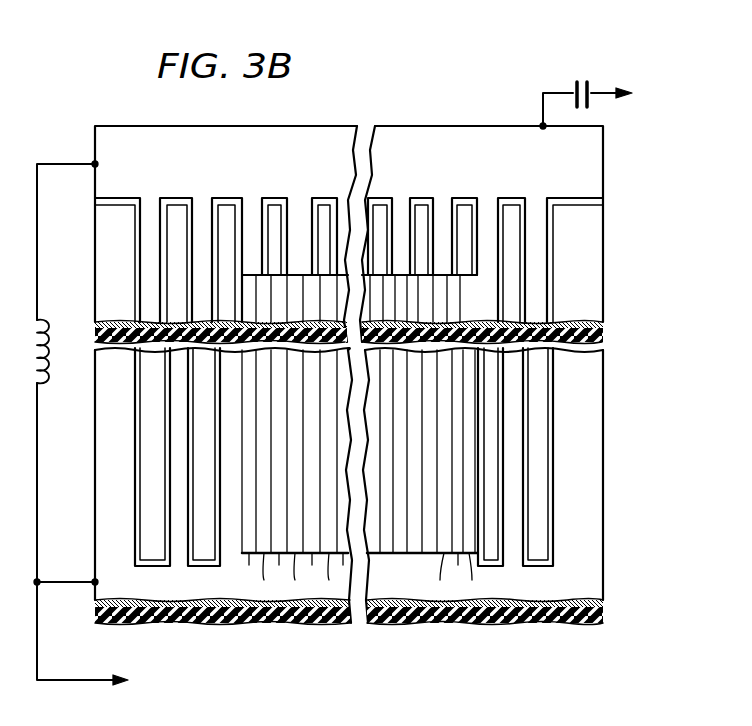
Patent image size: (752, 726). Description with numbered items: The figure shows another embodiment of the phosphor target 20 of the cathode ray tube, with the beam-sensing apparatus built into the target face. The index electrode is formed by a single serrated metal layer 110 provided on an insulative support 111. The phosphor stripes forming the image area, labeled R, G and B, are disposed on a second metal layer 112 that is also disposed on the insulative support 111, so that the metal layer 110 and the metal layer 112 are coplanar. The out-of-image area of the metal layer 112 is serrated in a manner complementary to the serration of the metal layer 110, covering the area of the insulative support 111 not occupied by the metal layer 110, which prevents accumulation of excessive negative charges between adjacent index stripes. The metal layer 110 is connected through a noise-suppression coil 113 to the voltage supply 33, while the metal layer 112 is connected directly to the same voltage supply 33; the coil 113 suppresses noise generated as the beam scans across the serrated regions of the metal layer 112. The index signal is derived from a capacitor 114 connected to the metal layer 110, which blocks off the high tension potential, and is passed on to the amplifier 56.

The phosphor target 20 is at (375, 115).
The metal layer 110 is at (452, 133).
The insulative support 111 is at (585, 622).
The metal layer 112 is at (596, 576).
The noise-suppression coil 113 is at (46, 366).
The capacitor 114 is at (581, 78).
The amplifier 56 is at (656, 95).
The voltage supply 33 is at (258, 682).